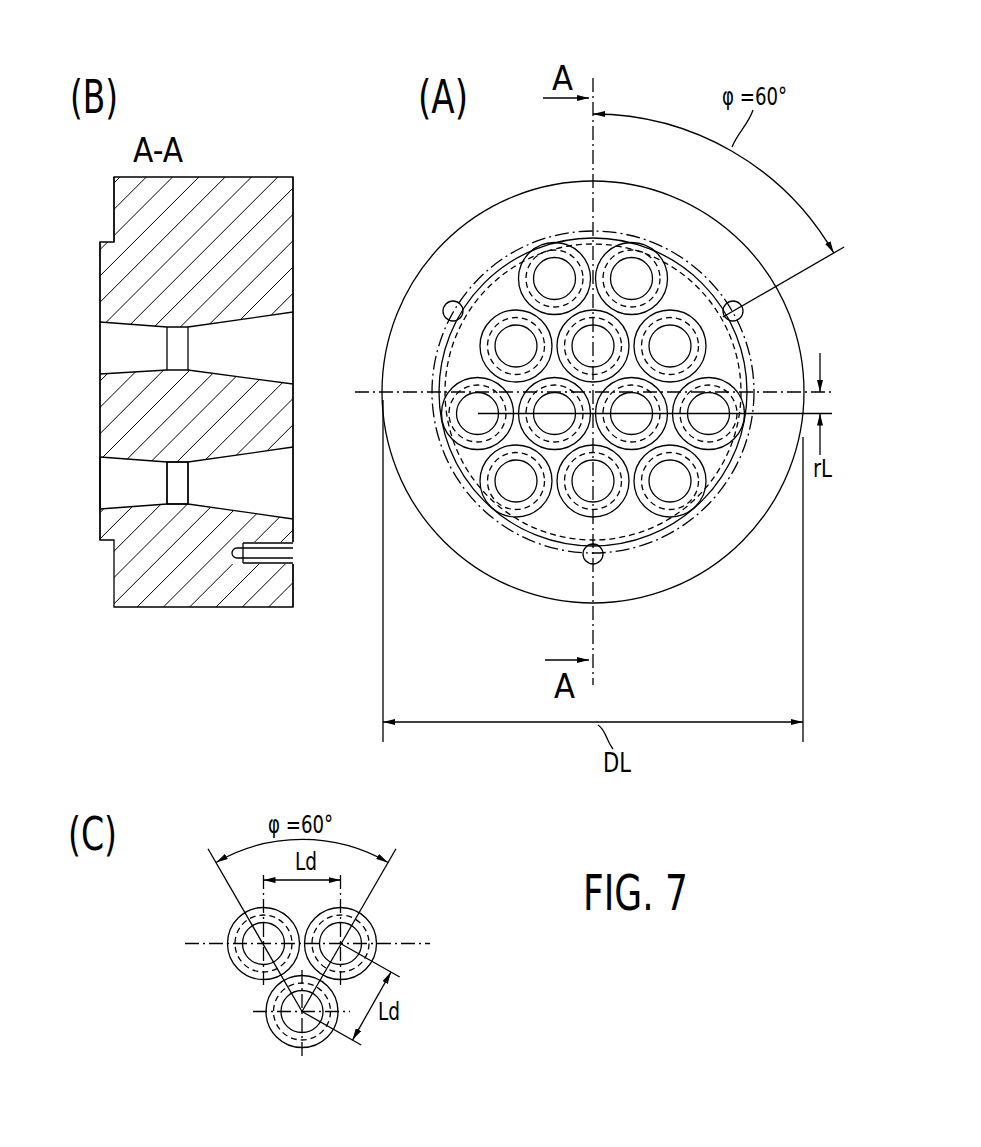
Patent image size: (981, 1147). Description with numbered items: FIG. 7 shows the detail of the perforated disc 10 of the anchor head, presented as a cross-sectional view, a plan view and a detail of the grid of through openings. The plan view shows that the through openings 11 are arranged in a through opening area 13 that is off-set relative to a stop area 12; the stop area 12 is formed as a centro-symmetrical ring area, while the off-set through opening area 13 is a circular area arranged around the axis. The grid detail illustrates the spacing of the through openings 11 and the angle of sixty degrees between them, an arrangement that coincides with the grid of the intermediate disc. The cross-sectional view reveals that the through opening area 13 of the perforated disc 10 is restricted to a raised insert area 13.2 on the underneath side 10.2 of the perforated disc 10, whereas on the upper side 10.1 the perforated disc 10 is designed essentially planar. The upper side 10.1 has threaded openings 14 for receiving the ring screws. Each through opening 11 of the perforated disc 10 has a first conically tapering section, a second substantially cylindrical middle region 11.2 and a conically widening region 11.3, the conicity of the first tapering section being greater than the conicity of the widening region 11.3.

The perforated disc 10 is at (223, 139).
The upper side 10.1 is at (294, 217).
The underneath side 10.2 is at (114, 203).
The through opening 11 is at (680, 351).
The second substantially cylindrical middle region 11.2 is at (177, 497).
The conically widening region 11.3 is at (112, 485).
The stop area 12 is at (710, 547).
The through opening area 13 is at (619, 521).
The raised insert area 13.2 is at (100, 277).
The threaded openings 14 is at (293, 550).